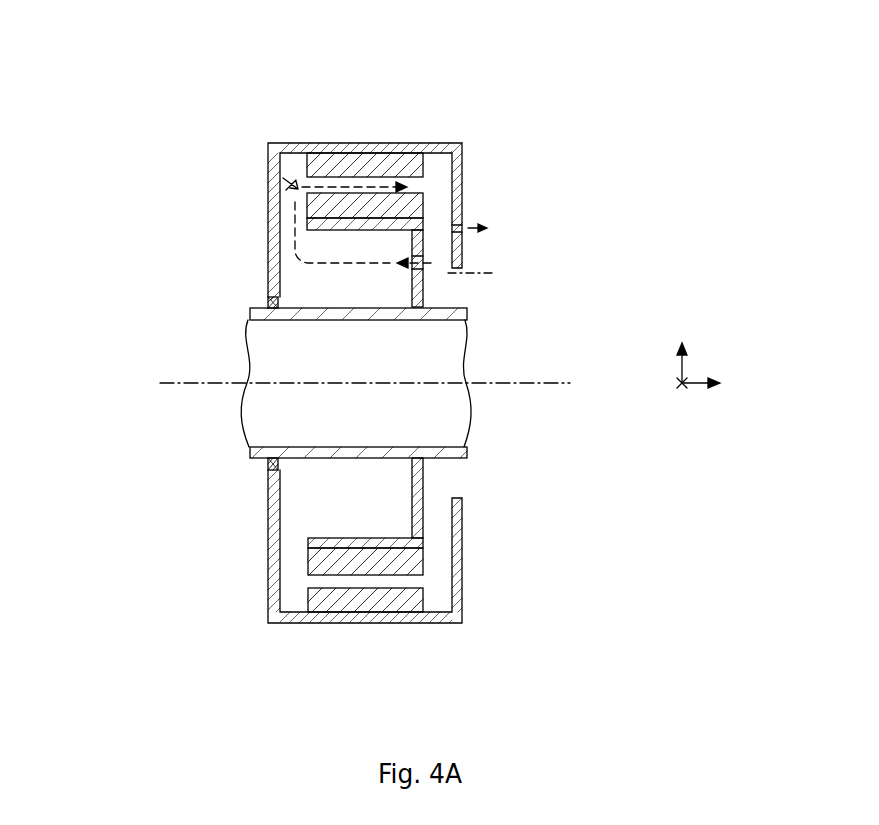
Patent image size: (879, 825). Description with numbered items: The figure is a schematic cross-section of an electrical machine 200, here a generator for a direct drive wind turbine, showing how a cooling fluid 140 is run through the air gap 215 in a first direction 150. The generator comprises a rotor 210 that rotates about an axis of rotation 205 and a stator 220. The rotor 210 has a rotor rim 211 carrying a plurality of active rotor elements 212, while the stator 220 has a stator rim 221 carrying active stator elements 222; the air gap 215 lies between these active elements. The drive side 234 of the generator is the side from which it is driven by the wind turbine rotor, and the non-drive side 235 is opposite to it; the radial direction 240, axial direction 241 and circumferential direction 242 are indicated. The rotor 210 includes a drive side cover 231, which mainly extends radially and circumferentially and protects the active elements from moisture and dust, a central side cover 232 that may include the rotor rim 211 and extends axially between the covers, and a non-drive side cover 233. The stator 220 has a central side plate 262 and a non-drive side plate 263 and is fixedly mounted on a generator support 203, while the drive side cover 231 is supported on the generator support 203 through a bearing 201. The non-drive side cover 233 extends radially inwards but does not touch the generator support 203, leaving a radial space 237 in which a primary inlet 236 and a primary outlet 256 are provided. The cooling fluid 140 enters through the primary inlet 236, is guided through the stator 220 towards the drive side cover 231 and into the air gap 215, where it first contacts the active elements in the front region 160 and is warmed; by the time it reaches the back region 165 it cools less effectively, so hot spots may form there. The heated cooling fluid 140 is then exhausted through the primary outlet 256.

The cooling fluid 140 is at (302, 226).
The first direction 150 is at (266, 146).
The front region 160 is at (313, 130).
The back region 165 is at (413, 130).
The electrical machine 200 is at (645, 286).
The bearing 201 is at (266, 303).
The generator support 203 is at (407, 320).
The axis of rotation 205 is at (537, 387).
The rotor 210 is at (437, 151).
The rotor rim 211 is at (327, 151).
The active rotor elements 212 is at (365, 162).
The air gap 215 is at (422, 185).
The stator 220 is at (440, 272).
The stator rim 221 is at (298, 186).
The active stator elements 222 is at (292, 186).
The drive side cover 231 is at (268, 236).
The central side cover 232 is at (290, 146).
The non-drive side cover 233 is at (463, 146).
The drive side 234 is at (228, 150).
The non-drive side 235 is at (645, 196).
The primary inlet 236 is at (467, 268).
The radial space 237 is at (443, 298).
The radial direction 240 is at (683, 374).
The axial direction 241 is at (697, 390).
The circumferential direction 242 is at (675, 392).
The primary outlet 256 is at (470, 229).
The central side plate 262 is at (424, 210).
The non-drive side plate 263 is at (424, 228).